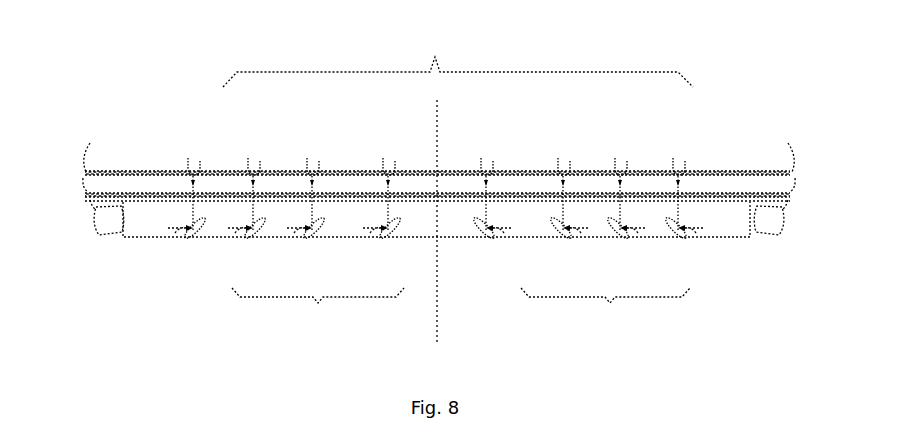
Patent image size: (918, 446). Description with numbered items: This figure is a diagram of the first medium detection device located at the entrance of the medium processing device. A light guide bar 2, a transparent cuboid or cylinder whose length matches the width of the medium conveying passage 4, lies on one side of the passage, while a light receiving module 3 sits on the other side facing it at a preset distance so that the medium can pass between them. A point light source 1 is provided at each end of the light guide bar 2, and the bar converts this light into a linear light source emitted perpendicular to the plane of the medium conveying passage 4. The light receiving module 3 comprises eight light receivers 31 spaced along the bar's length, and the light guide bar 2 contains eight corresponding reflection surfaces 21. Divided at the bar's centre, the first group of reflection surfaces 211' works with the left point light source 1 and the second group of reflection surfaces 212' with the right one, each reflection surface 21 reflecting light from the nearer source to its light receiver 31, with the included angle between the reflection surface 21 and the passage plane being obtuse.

The point light source 1 is at (93, 226).
The light guide bar 2 is at (140, 248).
The light receiving module 3 is at (458, 61).
The medium conveying passage 4 is at (118, 182).
The reflection surface 21 is at (697, 266).
The light receiver 31 is at (684, 160).
The first group of reflection surfaces 211' is at (318, 306).
The second group of reflection surfaces 212' is at (605, 306).